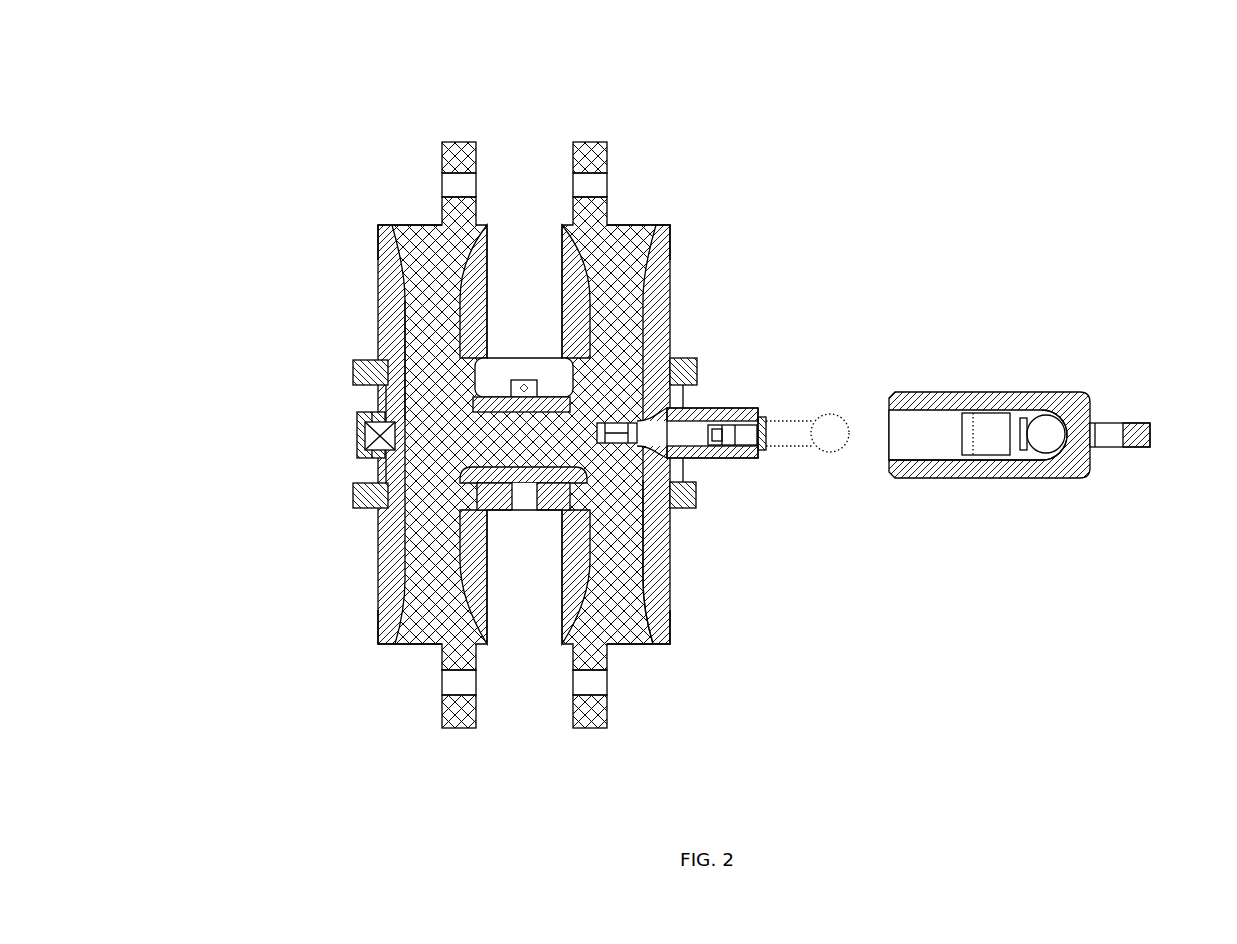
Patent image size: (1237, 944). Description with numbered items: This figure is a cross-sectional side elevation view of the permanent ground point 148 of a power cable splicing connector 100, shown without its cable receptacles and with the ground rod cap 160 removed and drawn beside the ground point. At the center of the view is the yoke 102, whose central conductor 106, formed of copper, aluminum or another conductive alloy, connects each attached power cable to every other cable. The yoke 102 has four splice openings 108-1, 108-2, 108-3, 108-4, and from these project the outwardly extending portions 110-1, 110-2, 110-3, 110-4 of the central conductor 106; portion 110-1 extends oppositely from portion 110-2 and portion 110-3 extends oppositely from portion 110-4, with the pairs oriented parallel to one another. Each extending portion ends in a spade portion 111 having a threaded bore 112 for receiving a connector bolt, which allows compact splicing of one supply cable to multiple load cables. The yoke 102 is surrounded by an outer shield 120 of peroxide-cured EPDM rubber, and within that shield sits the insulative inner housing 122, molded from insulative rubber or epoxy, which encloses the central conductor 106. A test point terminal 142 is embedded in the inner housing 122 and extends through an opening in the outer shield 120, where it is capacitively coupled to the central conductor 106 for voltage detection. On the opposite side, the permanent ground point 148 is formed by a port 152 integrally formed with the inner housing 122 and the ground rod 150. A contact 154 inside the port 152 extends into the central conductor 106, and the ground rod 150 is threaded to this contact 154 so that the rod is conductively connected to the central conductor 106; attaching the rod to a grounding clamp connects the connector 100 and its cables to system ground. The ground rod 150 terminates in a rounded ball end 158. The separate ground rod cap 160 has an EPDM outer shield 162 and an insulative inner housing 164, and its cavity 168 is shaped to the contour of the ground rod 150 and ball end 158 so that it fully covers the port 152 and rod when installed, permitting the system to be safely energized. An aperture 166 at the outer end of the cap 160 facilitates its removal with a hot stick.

The power cable splicing connector 100 is at (331, 144).
The yoke 102 is at (403, 337).
The central conductor 106 is at (437, 536).
The splice opening 108-1 is at (391, 515).
The splice opening 108-2 is at (393, 356).
The splice opening 108-3 is at (657, 515).
The splice opening 108-4 is at (655, 350).
The outwardly extending portion 110-1 is at (420, 641).
The outwardly extending portion 110-2 is at (410, 230).
The outwardly extending portion 110-3 is at (640, 641).
The outwardly extending portion 110-4 is at (630, 230).
The spade portion 111 is at (447, 158).
The threaded bore 112 is at (585, 187).
The outer shield 120 is at (362, 498).
The insulative inner housing 122 is at (655, 595).
The test point terminal 142 is at (365, 433).
The permanent ground point 148 is at (794, 337).
The ground rod 150 is at (770, 440).
The port 152 is at (745, 416).
The contact 154 is at (617, 435).
The rounded ball end 158 is at (828, 447).
The ground rod cap 160 is at (981, 337).
The EPDM outer shield 162 is at (1076, 402).
The insulative inner housing 164 is at (955, 462).
The aperture 166 is at (1111, 453).
The cavity 168 is at (944, 447).